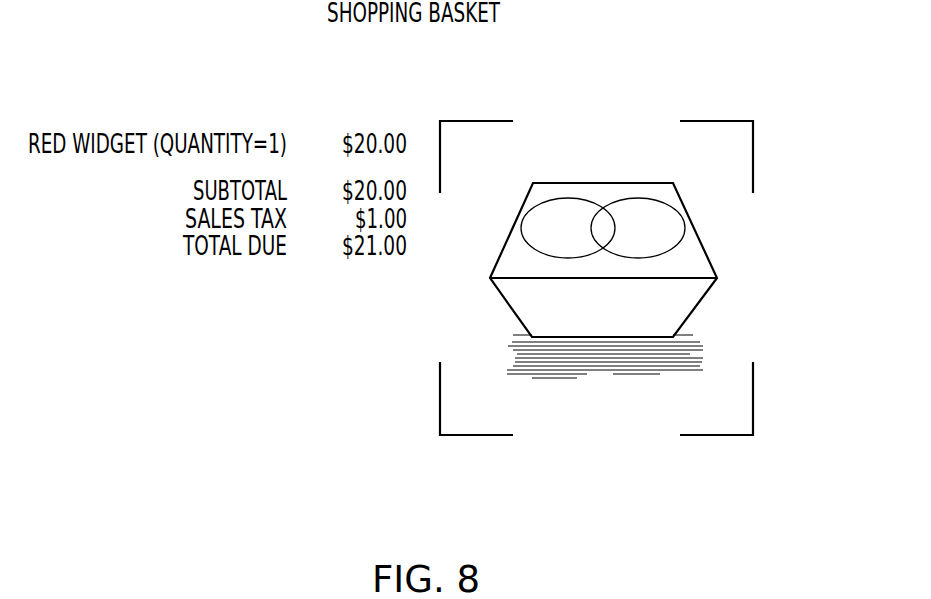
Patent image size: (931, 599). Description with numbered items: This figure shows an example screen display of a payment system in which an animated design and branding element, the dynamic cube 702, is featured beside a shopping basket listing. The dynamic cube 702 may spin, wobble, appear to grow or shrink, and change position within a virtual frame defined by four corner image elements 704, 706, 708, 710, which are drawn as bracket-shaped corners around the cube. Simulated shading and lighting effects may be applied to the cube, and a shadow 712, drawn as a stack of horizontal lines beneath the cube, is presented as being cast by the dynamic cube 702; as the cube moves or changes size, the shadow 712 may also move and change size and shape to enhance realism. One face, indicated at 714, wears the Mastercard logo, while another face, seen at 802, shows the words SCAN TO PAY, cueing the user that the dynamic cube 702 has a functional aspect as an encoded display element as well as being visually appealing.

The dynamic cube visual element 702 is at (728, 264).
The corner image element 704 is at (478, 121).
The corner image element 706 is at (712, 121).
The corner image element 708 is at (477, 435).
The corner image element 710 is at (712, 435).
The shadow 712 is at (688, 361).
The cube face bearing payment network logo 714 is at (588, 188).
The cube face showing SCAN TO PAY 802 is at (500, 310).